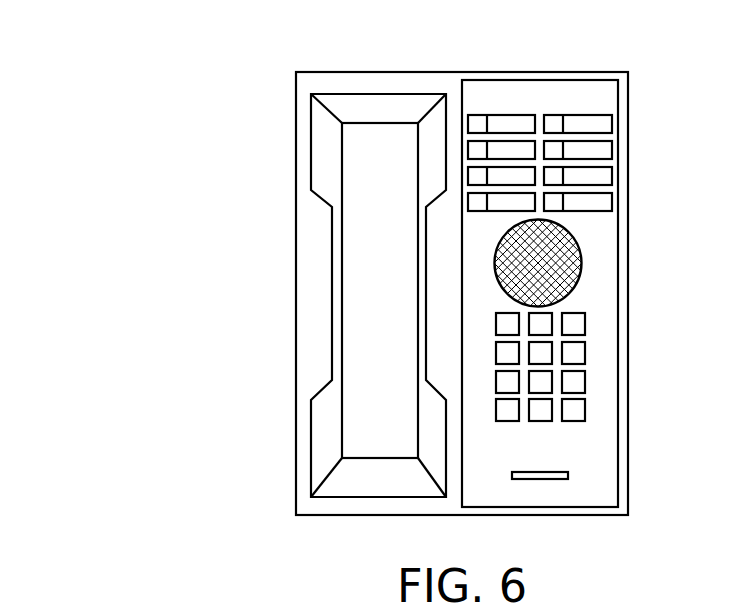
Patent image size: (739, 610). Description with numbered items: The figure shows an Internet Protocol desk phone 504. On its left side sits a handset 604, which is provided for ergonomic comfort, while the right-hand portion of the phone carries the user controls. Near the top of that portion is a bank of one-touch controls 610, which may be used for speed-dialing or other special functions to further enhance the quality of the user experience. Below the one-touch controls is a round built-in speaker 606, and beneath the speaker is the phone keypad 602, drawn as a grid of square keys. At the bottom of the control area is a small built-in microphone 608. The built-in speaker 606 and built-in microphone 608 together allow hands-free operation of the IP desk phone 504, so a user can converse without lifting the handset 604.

The IP desk phone 504 is at (216, 110).
The handset 604 is at (322, 180).
The one-touch controls 610 is at (602, 120).
The built-in speaker 606 is at (575, 258).
The phone keypad 602 is at (573, 411).
The built-in microphone 608 is at (540, 475).